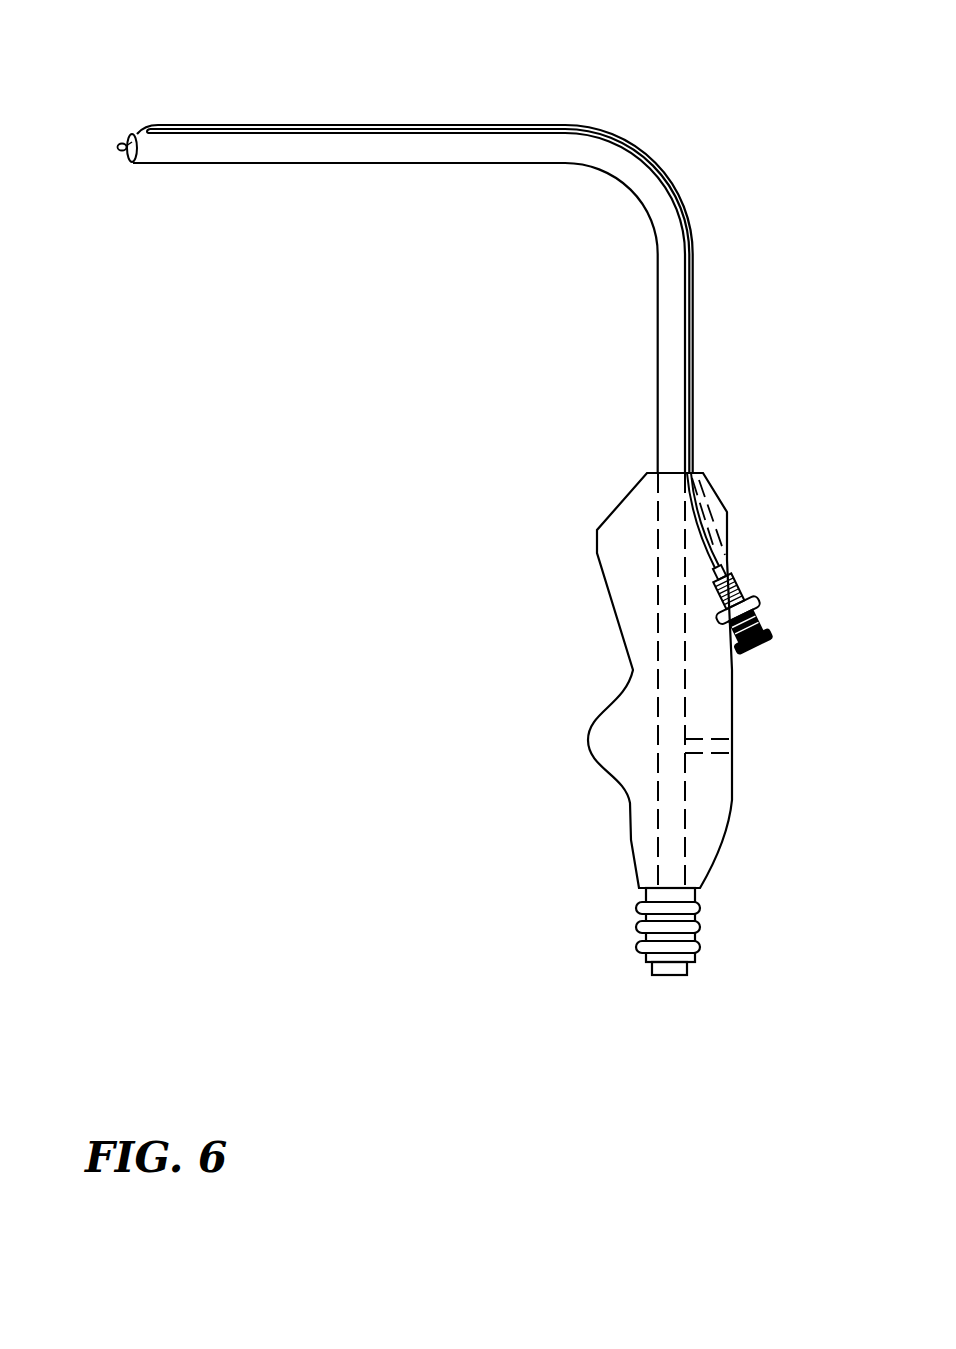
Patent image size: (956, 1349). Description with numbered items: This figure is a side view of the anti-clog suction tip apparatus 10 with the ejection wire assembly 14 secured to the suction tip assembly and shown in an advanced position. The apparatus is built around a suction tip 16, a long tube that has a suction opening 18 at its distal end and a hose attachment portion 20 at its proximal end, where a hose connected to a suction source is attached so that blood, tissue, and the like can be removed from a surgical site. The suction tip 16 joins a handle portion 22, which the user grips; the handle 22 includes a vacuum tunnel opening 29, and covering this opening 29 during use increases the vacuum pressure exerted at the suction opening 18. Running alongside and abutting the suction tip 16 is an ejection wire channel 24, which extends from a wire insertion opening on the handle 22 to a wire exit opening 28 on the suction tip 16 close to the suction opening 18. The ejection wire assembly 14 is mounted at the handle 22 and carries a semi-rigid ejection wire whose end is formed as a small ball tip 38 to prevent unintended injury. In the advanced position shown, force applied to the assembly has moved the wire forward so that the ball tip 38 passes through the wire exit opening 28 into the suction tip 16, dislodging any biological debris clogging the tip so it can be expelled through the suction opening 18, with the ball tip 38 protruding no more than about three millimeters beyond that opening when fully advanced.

The anti-clog suction tip apparatus 10 is at (126, 23).
The ejection wire assembly 14 is at (778, 621).
The suction tip 16 is at (348, 147).
The suction opening 18 is at (127, 157).
The hose attachment portion 20 is at (672, 937).
The handle portion 22 is at (648, 602).
The ejection wire channel 24 is at (667, 178).
The wire exit opening 28 is at (151, 140).
The vacuum tunnel opening 29 is at (742, 746).
The ball tip 38 is at (118, 143).